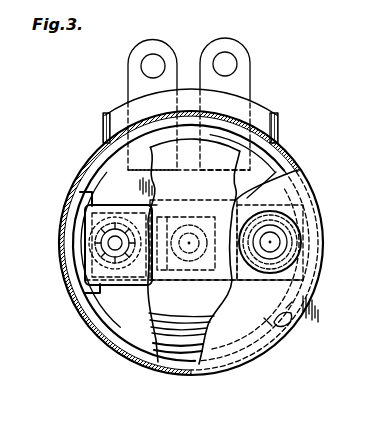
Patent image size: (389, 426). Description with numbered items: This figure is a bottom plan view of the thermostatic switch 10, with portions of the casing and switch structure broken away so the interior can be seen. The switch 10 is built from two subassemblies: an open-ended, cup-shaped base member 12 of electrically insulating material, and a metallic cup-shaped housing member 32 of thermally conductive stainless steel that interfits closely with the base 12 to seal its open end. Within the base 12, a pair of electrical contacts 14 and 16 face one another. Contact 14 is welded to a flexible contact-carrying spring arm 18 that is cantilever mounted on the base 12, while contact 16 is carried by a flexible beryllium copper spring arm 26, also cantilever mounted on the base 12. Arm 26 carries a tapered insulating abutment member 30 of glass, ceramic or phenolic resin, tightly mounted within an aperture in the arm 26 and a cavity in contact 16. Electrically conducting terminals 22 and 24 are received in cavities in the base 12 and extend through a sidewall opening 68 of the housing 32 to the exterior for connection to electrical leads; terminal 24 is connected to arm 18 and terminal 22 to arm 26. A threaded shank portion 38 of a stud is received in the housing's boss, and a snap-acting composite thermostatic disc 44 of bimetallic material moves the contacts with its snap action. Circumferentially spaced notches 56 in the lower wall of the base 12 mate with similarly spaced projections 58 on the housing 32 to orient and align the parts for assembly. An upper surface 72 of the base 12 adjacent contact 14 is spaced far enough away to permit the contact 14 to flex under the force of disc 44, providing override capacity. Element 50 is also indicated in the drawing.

The thermostatic switch 10 is at (319, 128).
The cup-shaped base member 12 is at (148, 334).
The electrical contact 14 is at (64, 224).
The electrical contact 16 is at (62, 259).
The contact-carrying spring arm 18 is at (198, 299).
The electrical terminal 22 is at (246, 76).
The electrical terminal 24 is at (133, 77).
The spring arm 26 is at (205, 200).
The tapered insulating abutment member 30 is at (126, 210).
The cup-shaped housing member 32 is at (300, 292).
The threaded shank portion 38 is at (272, 241).
The snap-acting thermostatic disc 44 is at (152, 300).
The bearing housing 50 is at (296, 247).
The notches 56 is at (296, 163).
The projections 58 is at (280, 323).
The sidewall opening 68 is at (262, 118).
The upper surface 72 is at (86, 242).